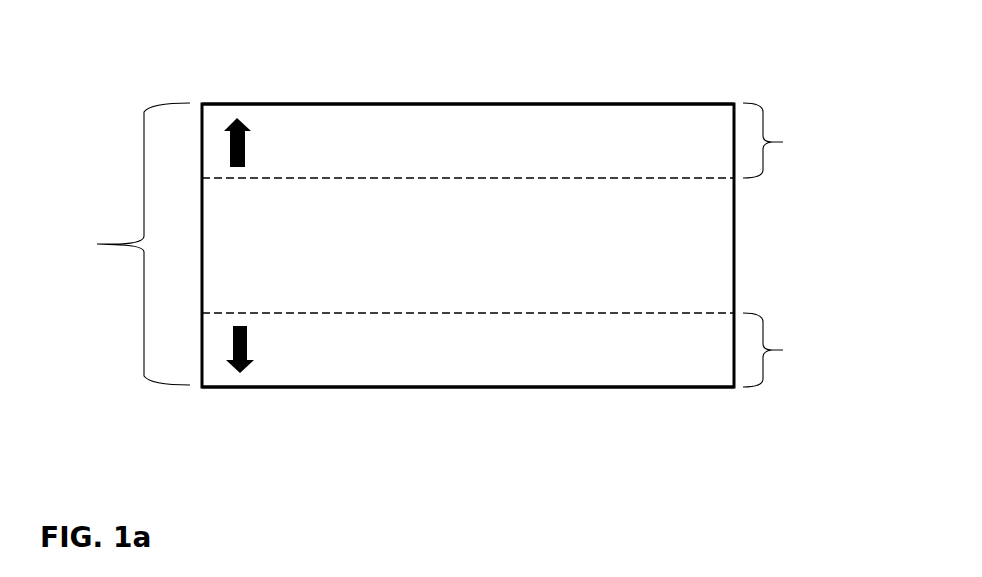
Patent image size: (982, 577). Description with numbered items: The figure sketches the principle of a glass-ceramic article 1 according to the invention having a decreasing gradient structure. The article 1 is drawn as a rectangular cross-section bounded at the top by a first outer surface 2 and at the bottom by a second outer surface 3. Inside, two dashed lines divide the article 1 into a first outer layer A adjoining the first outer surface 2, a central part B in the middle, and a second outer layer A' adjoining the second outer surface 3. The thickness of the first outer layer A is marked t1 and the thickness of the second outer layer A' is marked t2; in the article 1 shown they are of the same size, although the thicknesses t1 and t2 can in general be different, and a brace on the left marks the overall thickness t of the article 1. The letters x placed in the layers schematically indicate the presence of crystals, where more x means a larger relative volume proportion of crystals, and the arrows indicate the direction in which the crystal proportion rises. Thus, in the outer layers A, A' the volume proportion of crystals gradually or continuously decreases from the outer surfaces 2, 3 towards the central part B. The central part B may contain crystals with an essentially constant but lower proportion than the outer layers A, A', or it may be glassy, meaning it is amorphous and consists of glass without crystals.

The glass-ceramic article 1 is at (754, 77).
The first outer surface 2 is at (583, 103).
The second outer surface 3 is at (577, 388).
The first outer layer A is at (468, 113).
The second outer layer A' is at (468, 382).
The central part B is at (700, 243).
The thickness of the glass-ceramic article t is at (128, 244).
The thickness of the first outer layer t1 is at (783, 140).
The thickness of the second outer layer t2 is at (783, 350).